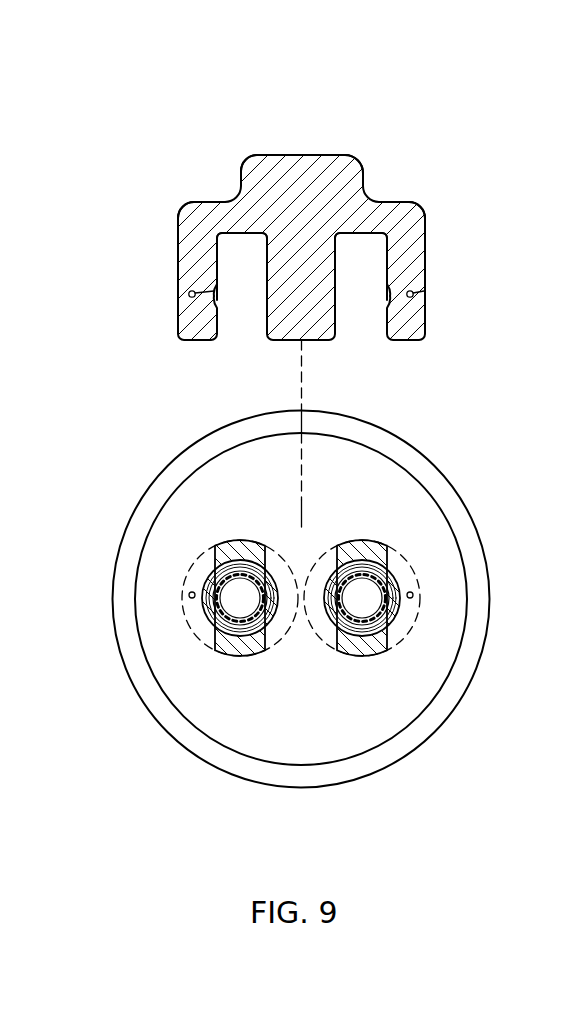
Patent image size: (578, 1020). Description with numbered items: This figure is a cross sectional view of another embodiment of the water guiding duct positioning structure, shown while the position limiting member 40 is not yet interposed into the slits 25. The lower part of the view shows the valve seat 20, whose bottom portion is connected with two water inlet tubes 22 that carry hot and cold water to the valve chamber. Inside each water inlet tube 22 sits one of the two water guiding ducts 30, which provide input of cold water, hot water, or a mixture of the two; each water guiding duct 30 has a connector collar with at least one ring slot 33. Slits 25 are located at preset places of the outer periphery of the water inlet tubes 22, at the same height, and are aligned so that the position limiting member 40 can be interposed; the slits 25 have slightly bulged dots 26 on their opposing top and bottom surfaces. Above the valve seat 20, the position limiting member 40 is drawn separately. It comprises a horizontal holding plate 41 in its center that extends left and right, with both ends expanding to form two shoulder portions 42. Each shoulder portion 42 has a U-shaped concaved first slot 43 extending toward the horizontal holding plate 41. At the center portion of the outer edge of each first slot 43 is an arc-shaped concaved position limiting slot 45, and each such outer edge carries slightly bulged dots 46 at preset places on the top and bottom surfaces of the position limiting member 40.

The valve seat 20 is at (155, 736).
The water inlet tubes 22 is at (223, 543).
The slits 25 is at (197, 626).
The bulged dots 26 is at (189, 594).
The water guiding ducts 30 is at (251, 572).
The ring slot 33 is at (262, 618).
The position limiting member 40 is at (360, 156).
The horizontal holding plate 41 is at (253, 172).
The shoulder portions 42 is at (183, 223).
The first slot 43 is at (238, 327).
The position limiting slot 45 is at (189, 295).
The bulged dots 46 is at (425, 290).